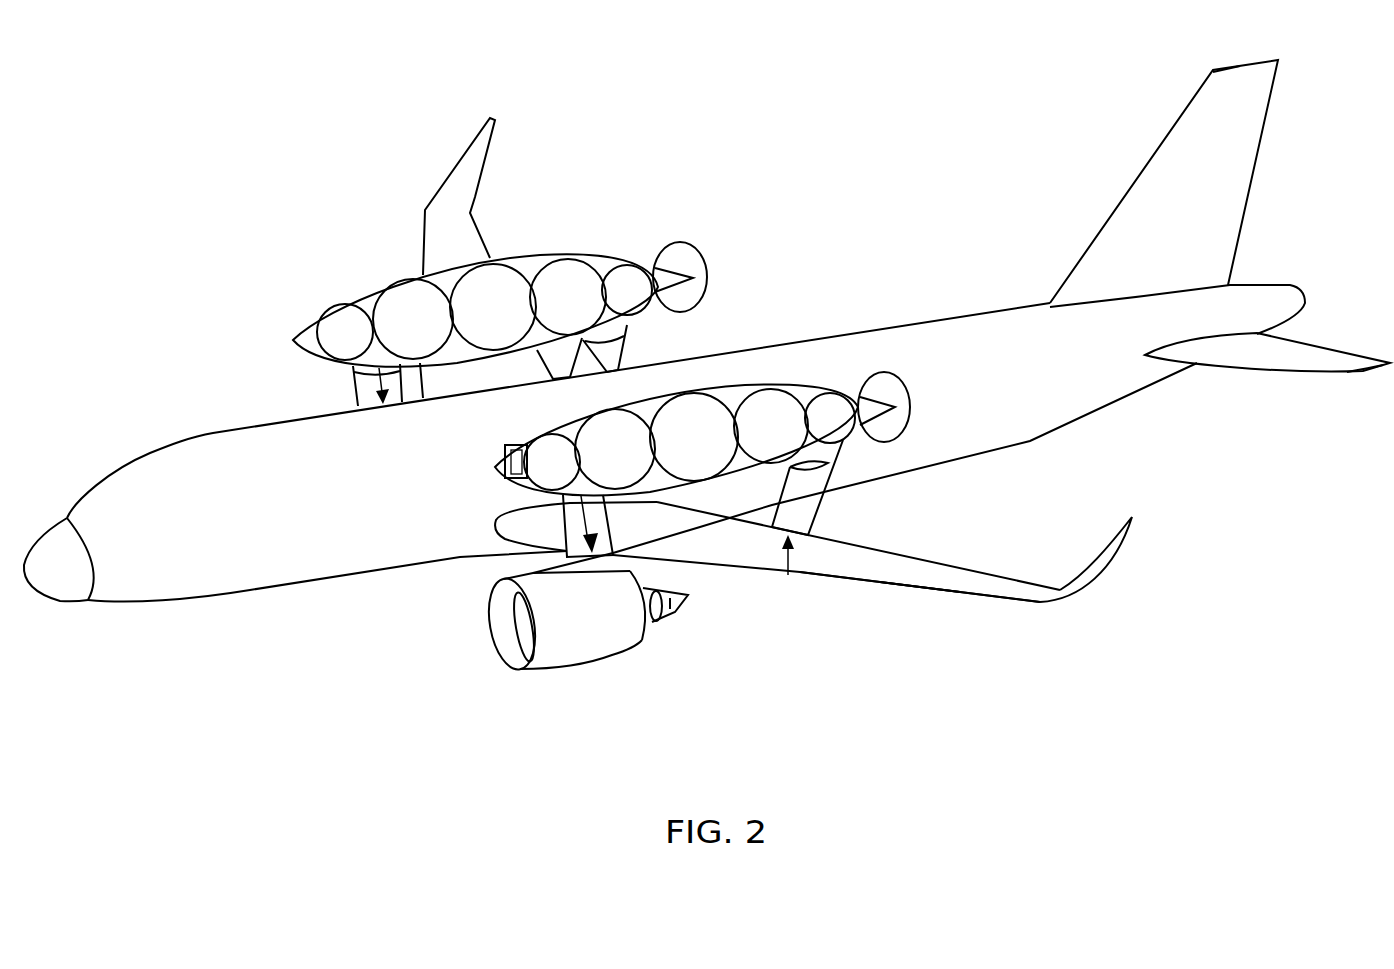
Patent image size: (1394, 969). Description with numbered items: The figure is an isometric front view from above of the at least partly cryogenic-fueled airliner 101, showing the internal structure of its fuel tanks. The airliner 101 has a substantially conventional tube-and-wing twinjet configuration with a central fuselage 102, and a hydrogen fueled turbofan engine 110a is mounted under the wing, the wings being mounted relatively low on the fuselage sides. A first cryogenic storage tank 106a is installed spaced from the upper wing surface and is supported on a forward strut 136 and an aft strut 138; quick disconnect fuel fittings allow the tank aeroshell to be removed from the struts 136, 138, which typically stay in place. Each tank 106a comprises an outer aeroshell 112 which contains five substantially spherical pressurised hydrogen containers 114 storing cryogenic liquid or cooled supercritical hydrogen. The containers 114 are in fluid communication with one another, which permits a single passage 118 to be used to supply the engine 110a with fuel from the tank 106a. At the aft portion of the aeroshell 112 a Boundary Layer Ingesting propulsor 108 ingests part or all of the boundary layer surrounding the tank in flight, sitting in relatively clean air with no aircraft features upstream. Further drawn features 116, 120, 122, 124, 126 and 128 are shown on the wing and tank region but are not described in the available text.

The airliner 101 is at (758, 152).
The fuselage 102 is at (213, 447).
The first cryogenic storage tank 106a is at (613, 430).
The Boundary Layer Ingesting propulsor 108 is at (883, 370).
The hydrogen fueled turbofan engine 110a is at (583, 667).
The outer aeroshell 112 is at (725, 393).
The spherical pressurised hydrogen container 114 is at (770, 408).
The air inlet 116 is at (503, 464).
The passage 118 is at (600, 528).
The airflow direction 120 is at (789, 577).
The wing 122 is at (693, 577).
The wing leading edge 124 is at (860, 582).
The winglet 126 is at (987, 572).
The wing trailing edge 128 is at (930, 588).
The strut 136 is at (585, 555).
The aft strut 138 is at (830, 478).